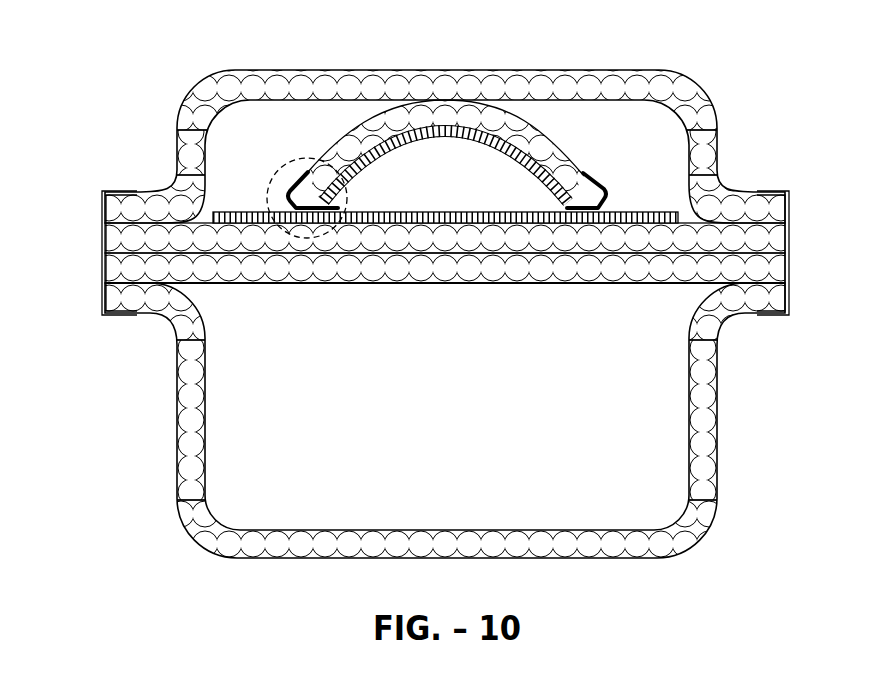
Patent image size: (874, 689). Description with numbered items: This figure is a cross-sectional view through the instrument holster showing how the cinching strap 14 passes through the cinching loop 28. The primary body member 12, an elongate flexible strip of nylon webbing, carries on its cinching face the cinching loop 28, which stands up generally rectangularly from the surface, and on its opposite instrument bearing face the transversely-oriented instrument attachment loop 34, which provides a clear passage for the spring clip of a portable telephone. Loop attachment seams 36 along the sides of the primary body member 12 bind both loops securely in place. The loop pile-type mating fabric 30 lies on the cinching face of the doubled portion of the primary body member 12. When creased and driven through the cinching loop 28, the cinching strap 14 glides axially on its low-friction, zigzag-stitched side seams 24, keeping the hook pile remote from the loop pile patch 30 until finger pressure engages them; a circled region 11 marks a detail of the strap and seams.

The detail region 11 is at (280, 134).
The primary body member 12 is at (560, 242).
The cinching strap 14 is at (360, 141).
The side seams 24 is at (603, 190).
The cinching loop 28 is at (366, 70).
The loop pile-type mating fabric 30 is at (480, 211).
The instrument attachment loop 34 is at (607, 553).
The loop attachment seams 36 is at (122, 192).